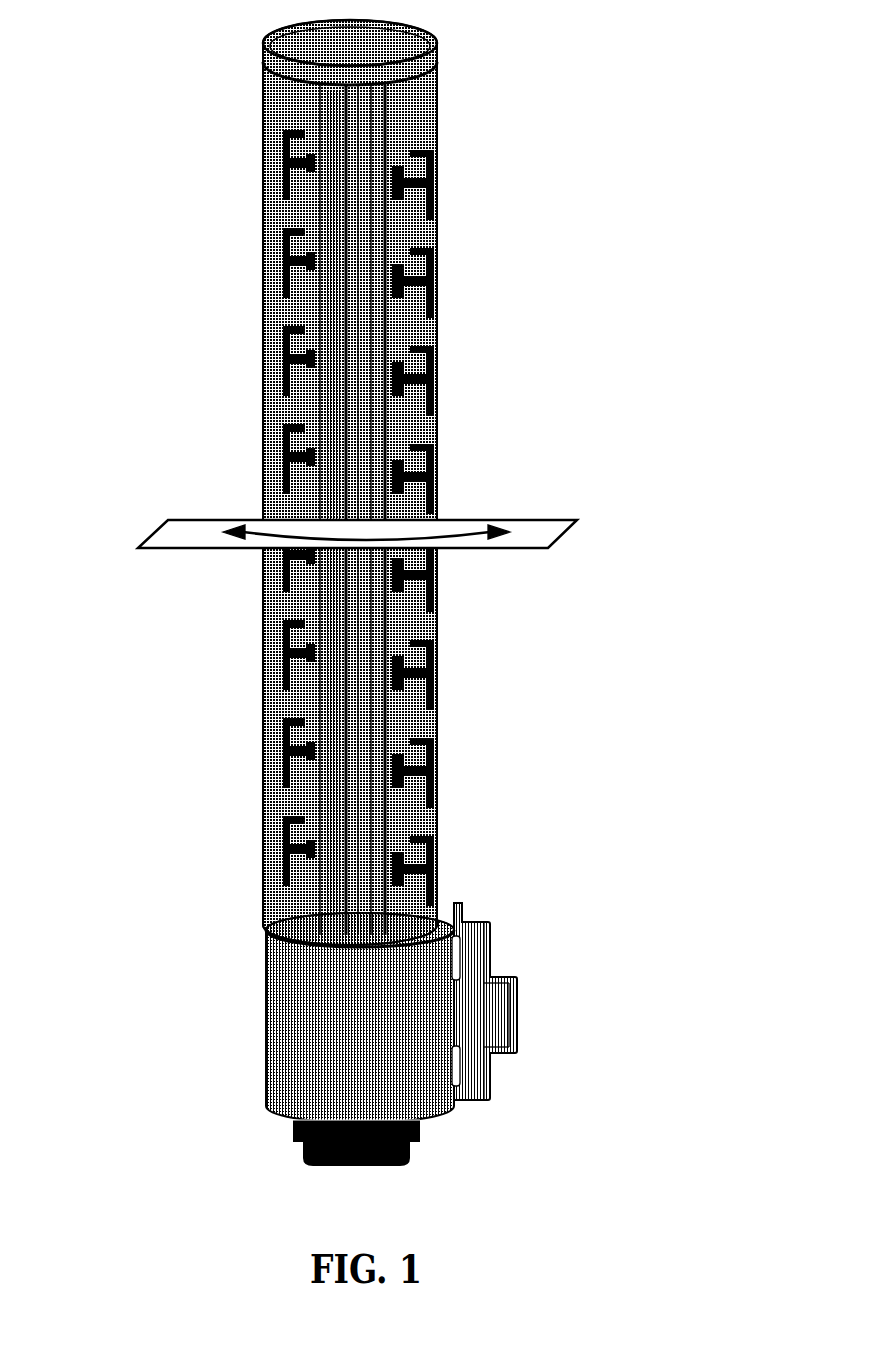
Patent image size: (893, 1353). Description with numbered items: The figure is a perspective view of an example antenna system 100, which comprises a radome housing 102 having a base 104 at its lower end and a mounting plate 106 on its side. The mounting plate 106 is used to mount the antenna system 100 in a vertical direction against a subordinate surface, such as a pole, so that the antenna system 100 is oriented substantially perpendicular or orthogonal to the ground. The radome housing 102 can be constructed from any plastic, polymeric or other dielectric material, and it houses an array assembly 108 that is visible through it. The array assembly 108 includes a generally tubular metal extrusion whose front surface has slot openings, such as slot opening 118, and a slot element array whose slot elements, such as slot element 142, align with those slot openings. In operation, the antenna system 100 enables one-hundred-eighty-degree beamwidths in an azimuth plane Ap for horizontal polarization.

The antenna system 100 is at (398, 593).
The radome housing 102 is at (425, 295).
The base 104 is at (300, 1037).
The mounting plate 106 is at (490, 1018).
The array assembly 108 is at (457, 221).
The slot opening 118 is at (333, 247).
The slot element 142 is at (333, 283).
The azimuth plane Ap is at (577, 520).